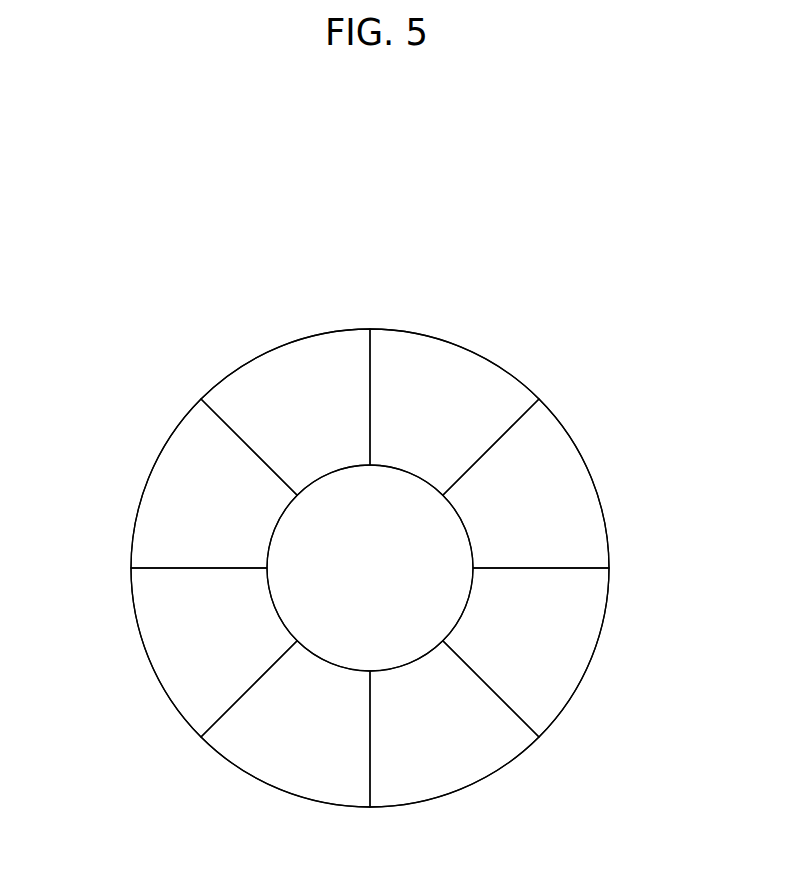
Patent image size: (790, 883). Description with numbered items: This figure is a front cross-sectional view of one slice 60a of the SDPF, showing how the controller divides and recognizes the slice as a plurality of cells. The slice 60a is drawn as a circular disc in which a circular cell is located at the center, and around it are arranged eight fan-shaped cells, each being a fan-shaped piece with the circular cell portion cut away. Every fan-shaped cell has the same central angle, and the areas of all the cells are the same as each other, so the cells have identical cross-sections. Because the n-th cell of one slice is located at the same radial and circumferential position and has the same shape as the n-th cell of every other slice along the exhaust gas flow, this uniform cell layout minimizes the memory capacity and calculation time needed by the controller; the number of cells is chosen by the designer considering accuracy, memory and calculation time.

The slice 60a is at (405, 252).